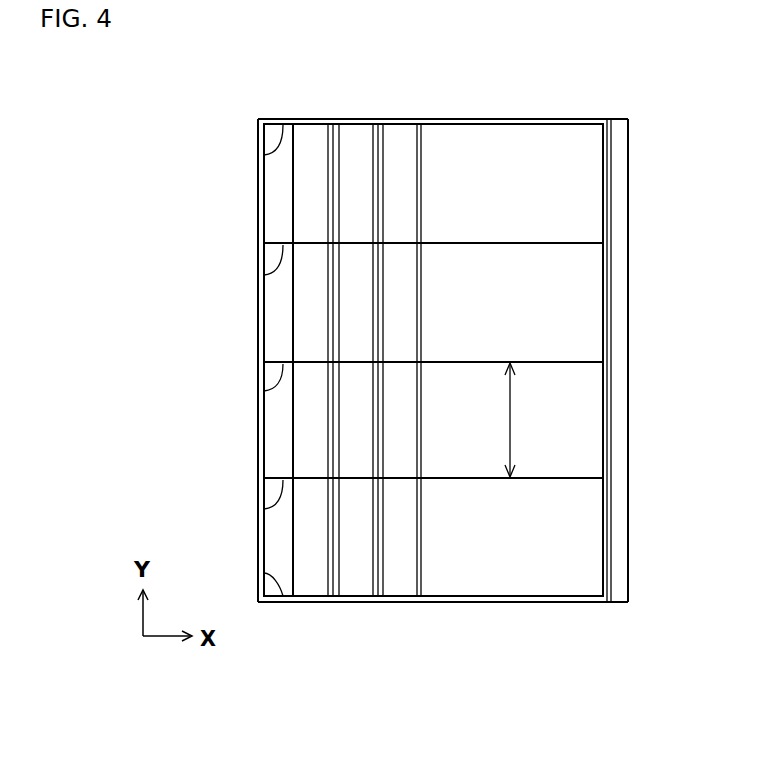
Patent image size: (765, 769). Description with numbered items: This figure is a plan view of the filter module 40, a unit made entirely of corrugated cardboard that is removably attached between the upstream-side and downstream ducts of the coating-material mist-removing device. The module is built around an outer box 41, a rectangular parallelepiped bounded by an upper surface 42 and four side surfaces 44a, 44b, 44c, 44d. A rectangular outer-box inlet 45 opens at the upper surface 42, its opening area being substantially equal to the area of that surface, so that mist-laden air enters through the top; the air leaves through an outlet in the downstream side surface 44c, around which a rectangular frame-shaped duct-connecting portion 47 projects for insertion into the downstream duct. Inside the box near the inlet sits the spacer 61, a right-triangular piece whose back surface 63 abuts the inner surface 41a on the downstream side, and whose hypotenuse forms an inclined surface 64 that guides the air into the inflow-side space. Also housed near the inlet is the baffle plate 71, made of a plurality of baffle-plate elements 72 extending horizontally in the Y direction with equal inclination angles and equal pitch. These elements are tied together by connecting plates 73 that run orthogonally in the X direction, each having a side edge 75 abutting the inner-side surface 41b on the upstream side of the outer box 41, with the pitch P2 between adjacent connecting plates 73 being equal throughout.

The filter module 40 is at (224, 116).
The outer box 41 is at (355, 123).
The inner surface on the downstream side of the outer box 41a is at (600, 189).
The inner-side surface on the upstream side of the outer box 41b is at (270, 321).
The upper surface 42 is at (561, 117).
The side surface 44a is at (255, 321).
The side surface 44b is at (444, 606).
The side surface 44c is at (610, 240).
The side surface 44d is at (439, 116).
The outer-box inlet 45 is at (594, 348).
The duct-connecting portion 47 is at (621, 545).
The spacer 61 is at (497, 136).
The back surface 63 is at (610, 456).
The inclined surface 64 is at (541, 575).
The baffle plate 71 is at (292, 432).
The baffle-plate element 72 is at (305, 207).
The connecting plate 73 is at (264, 155).
The side edge 75 is at (256, 476).
The pitch between adjacent connecting plates P2 is at (538, 418).